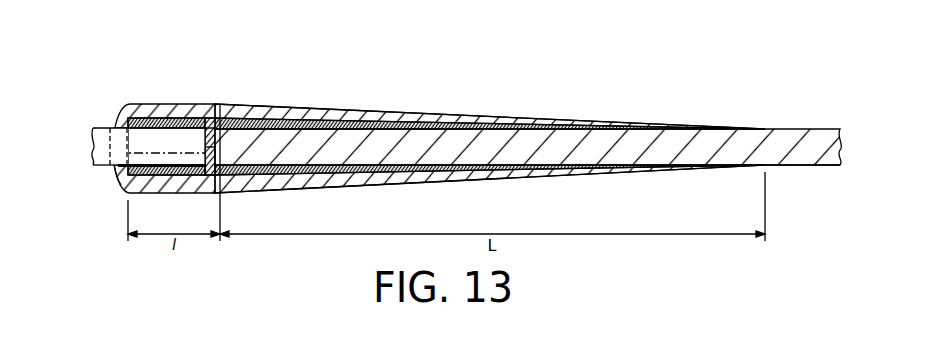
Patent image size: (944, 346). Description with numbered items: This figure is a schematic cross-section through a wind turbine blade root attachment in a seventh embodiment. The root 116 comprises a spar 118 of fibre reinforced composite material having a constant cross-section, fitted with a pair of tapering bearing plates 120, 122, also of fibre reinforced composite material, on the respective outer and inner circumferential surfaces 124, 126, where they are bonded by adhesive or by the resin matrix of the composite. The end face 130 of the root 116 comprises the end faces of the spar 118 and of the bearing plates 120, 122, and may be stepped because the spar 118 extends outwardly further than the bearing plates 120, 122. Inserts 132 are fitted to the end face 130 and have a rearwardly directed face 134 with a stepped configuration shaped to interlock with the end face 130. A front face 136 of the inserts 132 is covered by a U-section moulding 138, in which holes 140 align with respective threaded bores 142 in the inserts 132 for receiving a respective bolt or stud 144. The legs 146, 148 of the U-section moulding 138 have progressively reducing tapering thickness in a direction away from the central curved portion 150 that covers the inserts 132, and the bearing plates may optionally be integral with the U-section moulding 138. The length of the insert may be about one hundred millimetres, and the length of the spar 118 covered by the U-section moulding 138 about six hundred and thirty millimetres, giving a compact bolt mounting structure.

The root 116 is at (817, 123).
The spar 118 is at (803, 167).
The tapering bearing plate 120 is at (267, 113).
The tapering bearing plate 122 is at (275, 190).
The outer circumferential surface 124 is at (346, 124).
The inner circumferential surface 126 is at (347, 177).
The end face 130 is at (211, 120).
The insert 132 is at (204, 190).
The rearwardly directed face 134 is at (214, 120).
The front face 136 is at (130, 188).
The U-section moulding 138 is at (140, 108).
The hole 140 is at (127, 135).
The threaded bore 142 is at (147, 191).
The bolt or stud 144 is at (88, 123).
The leg 146 is at (452, 118).
The leg 148 is at (452, 177).
The central curved portion 150 is at (118, 177).